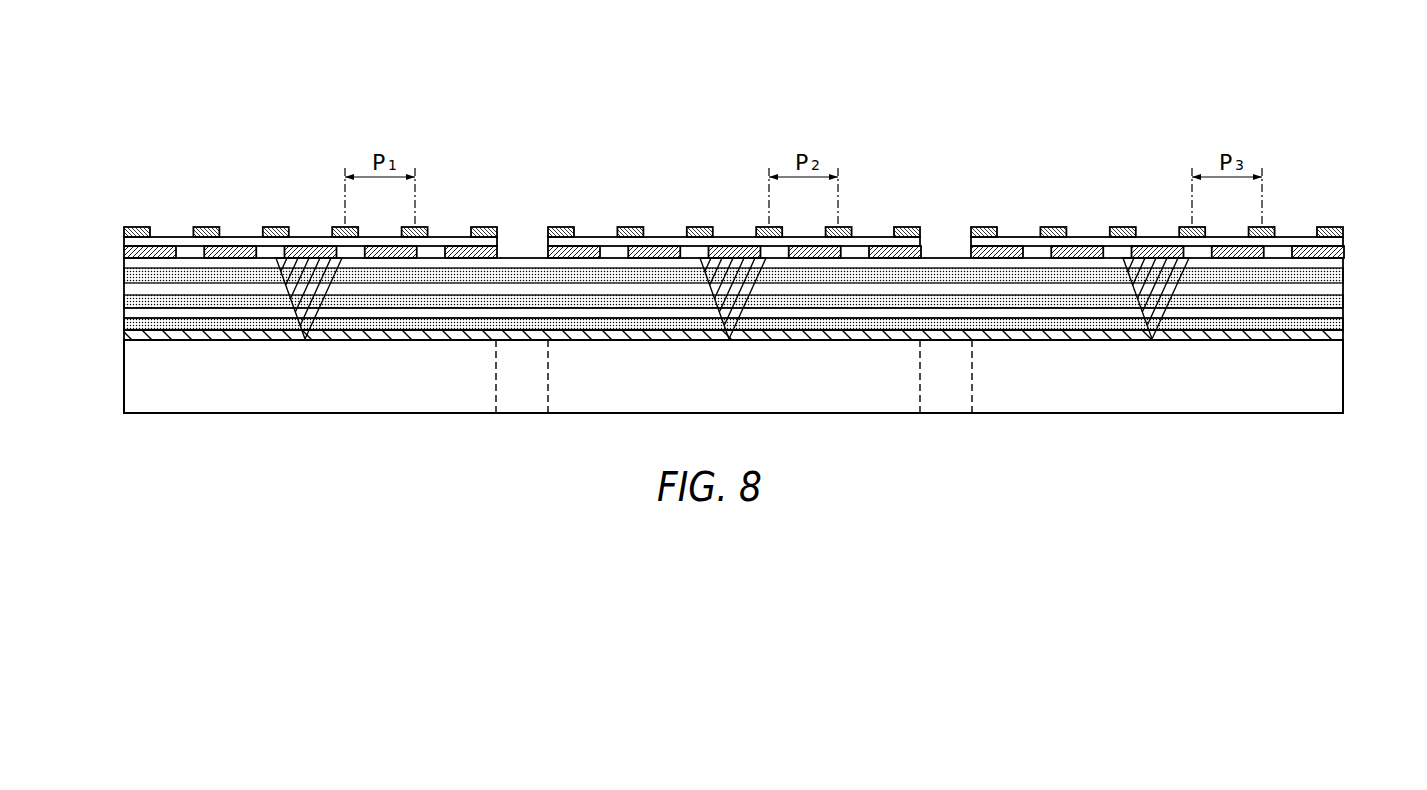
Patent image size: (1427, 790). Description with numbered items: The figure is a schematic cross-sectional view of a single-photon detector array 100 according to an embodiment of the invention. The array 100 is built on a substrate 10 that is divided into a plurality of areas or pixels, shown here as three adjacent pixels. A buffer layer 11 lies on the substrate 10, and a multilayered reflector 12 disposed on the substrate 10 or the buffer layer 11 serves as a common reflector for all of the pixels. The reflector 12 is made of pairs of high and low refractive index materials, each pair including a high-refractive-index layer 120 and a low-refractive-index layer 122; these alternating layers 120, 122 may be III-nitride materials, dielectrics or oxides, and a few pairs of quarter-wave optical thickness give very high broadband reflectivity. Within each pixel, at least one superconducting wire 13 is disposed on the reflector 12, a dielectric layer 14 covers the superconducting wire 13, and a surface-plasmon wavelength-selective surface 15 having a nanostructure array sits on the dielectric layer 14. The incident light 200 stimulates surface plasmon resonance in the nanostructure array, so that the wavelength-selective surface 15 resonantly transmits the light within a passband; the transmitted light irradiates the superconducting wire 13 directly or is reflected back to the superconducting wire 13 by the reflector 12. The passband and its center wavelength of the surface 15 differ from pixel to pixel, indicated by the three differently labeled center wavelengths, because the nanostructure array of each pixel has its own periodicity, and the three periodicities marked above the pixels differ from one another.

The substrate 10 is at (1343, 380).
The buffer layer 11 is at (1343, 332).
The multilayered reflector 12 is at (717, 298).
The high-refractive-index layer 120 is at (124, 323).
The low-refractive-index layer 122 is at (124, 312).
The superconducting wire 13 is at (1343, 248).
The dielectric layer 14 is at (1343, 240).
The surface-plasmon wavelength-selective surface 15 is at (1343, 230).
The single-photon detector array 100 is at (1372, 101).
The incident light 200 is at (276, 258).